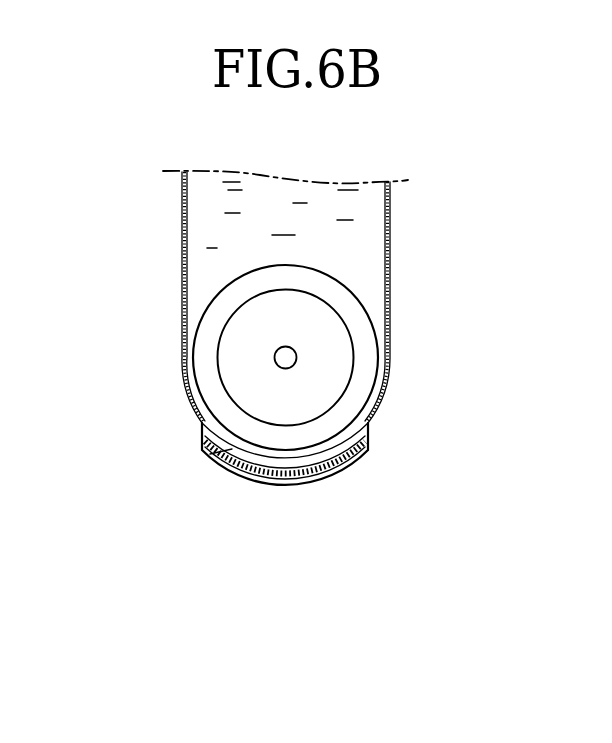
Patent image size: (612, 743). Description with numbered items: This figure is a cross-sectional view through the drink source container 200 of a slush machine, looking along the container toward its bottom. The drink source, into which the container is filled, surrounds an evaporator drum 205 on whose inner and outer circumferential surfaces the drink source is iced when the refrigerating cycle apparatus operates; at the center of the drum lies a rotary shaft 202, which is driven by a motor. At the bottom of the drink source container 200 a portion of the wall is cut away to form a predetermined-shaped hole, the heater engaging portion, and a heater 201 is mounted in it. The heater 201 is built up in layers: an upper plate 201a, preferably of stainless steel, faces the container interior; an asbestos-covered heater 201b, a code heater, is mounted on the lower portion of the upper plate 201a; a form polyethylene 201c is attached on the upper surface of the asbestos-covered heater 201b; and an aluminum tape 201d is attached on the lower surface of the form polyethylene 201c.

The drink source container 200 is at (159, 248).
The evaporator drum 205 is at (347, 302).
The rotary shaft 202 is at (290, 361).
The heater 201 is at (286, 494).
The upper plate 201a is at (203, 456).
The asbestos-covered heater 201b is at (200, 432).
The form polyethylene 201c is at (371, 459).
The aluminum tape 201d is at (332, 474).